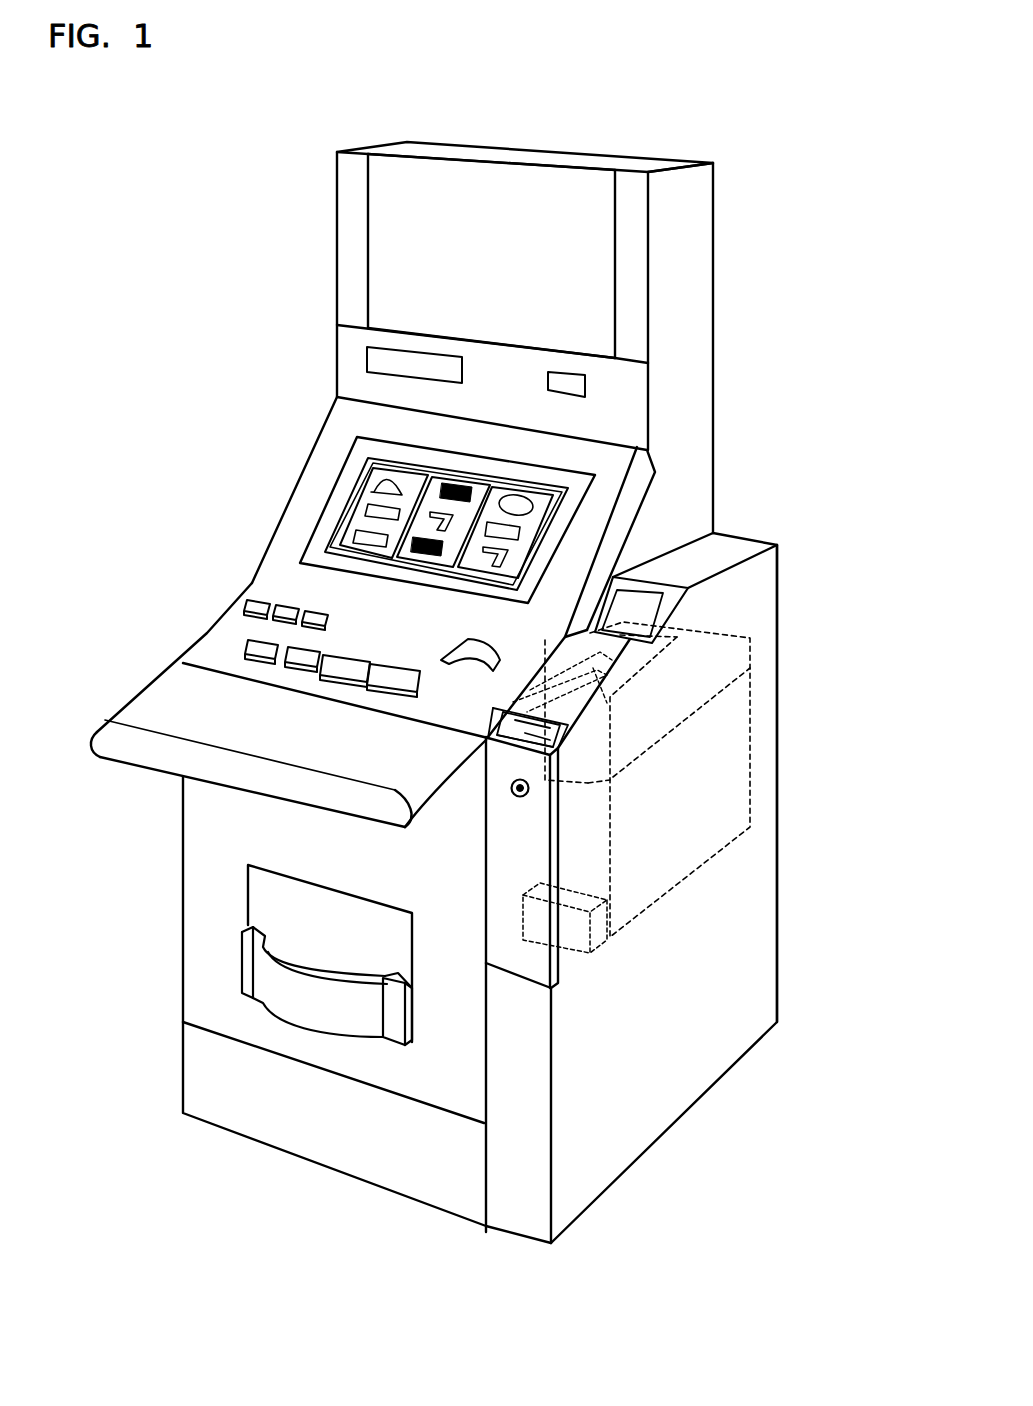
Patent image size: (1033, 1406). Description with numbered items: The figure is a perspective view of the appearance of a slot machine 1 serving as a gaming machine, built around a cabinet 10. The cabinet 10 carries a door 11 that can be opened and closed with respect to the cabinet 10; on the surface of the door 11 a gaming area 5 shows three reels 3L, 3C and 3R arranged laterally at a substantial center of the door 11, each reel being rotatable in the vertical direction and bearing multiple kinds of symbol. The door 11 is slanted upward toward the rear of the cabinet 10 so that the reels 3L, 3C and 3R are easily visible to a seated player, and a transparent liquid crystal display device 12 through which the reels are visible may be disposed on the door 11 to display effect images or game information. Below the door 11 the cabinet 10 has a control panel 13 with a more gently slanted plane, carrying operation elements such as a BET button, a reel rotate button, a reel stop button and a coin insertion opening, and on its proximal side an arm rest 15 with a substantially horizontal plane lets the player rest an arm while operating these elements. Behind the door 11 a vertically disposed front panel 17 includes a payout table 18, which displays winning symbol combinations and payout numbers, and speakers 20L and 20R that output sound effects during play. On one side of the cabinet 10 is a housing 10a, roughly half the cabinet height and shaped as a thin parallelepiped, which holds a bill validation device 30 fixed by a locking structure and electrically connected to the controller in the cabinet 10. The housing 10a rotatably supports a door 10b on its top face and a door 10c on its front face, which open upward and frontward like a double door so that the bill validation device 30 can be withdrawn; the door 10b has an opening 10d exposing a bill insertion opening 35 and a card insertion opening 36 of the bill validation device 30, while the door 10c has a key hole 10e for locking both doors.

The slot machine 1 is at (792, 252).
The reel 3L is at (372, 488).
The reel 3C is at (484, 484).
The reel 3R is at (545, 500).
The gaming area 5 is at (348, 437).
The cabinet 10 is at (699, 412).
The housing 10a is at (755, 597).
The door 10b is at (603, 667).
The door 10c is at (527, 957).
The opening 10d is at (496, 728).
The key hole 10e is at (531, 789).
The door 11 is at (278, 562).
The transparent liquid crystal display device 12 is at (310, 512).
The control panel 13 is at (218, 638).
The arm rest 15 is at (150, 692).
The front panel 17 is at (685, 223).
The payout table 18 is at (380, 247).
The speaker 20L is at (345, 177).
The speaker 20R is at (630, 188).
The bill validation device 30 is at (758, 738).
The bill insertion opening 35 is at (485, 718).
The card insertion opening 36 is at (466, 965).